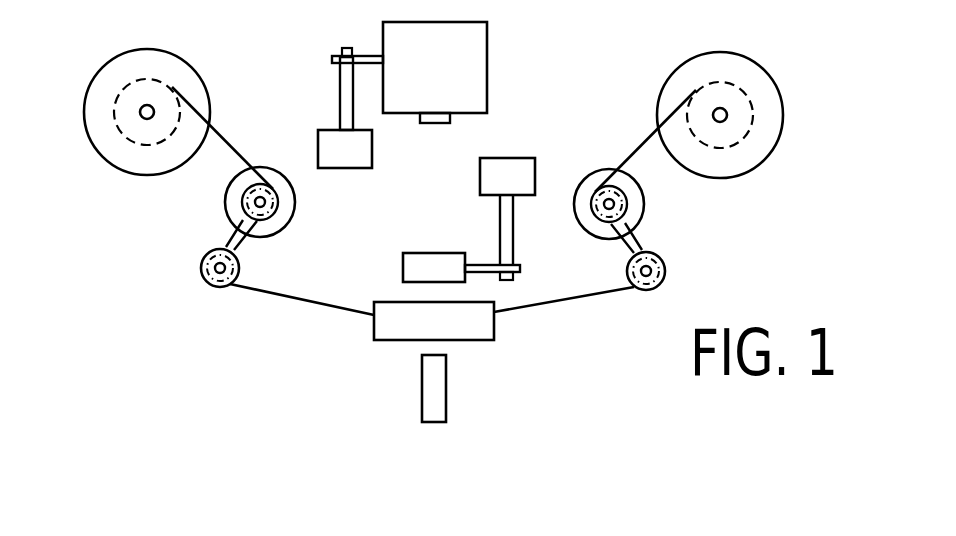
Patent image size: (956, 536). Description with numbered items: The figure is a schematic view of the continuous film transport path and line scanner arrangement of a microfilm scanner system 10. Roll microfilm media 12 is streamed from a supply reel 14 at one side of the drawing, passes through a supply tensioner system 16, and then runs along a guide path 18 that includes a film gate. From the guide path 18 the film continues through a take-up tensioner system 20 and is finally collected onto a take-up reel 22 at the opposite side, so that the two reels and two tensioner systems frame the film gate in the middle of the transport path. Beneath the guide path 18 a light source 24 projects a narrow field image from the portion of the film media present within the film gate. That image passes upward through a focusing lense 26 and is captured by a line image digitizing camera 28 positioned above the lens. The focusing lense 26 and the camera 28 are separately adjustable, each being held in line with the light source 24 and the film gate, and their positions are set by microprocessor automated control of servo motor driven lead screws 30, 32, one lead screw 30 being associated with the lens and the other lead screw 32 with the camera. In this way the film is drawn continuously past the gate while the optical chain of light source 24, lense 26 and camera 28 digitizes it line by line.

The microfilm scanner system 10 is at (628, 416).
The roll microfilm media 12 is at (293, 302).
The supply reel 14 is at (202, 75).
The supply tensioner system 16 is at (292, 217).
The guide path 18 is at (494, 325).
The take-up tensioner system 20 is at (645, 198).
The take-up reel 22 is at (768, 153).
The light source 24 is at (421, 403).
The focusing lense 26 is at (402, 268).
The line image digitizing camera 28 is at (487, 62).
The servo motor driven lead screw 30 is at (520, 158).
The servo motor driven lead screw 32 is at (353, 168).